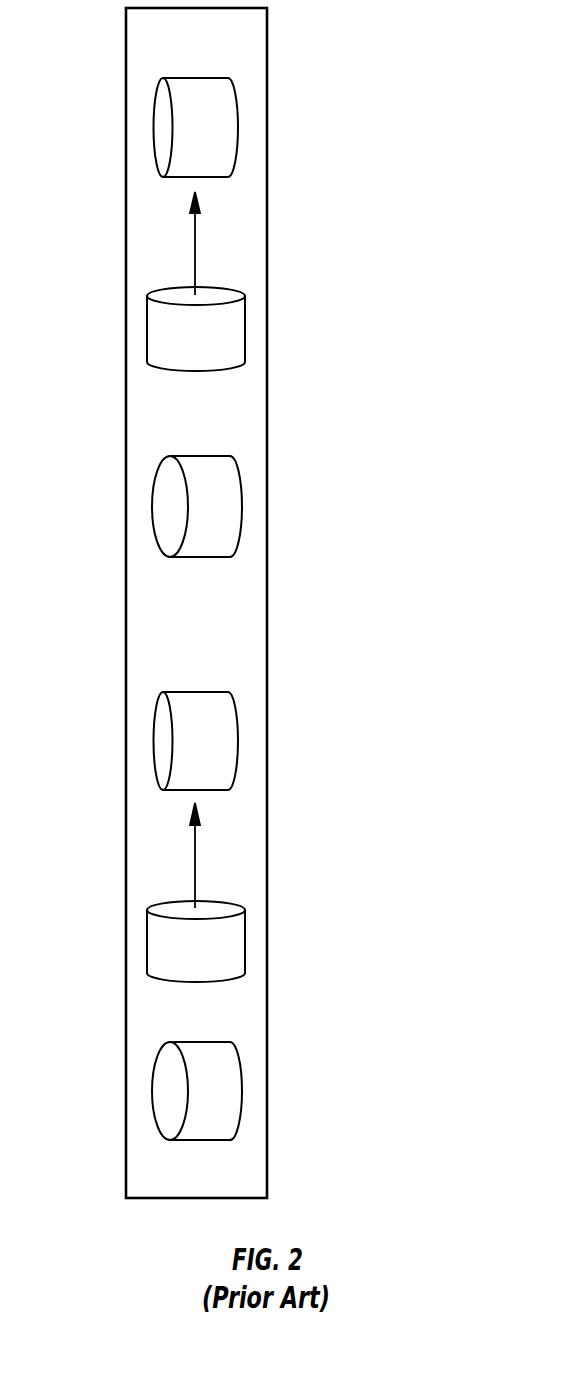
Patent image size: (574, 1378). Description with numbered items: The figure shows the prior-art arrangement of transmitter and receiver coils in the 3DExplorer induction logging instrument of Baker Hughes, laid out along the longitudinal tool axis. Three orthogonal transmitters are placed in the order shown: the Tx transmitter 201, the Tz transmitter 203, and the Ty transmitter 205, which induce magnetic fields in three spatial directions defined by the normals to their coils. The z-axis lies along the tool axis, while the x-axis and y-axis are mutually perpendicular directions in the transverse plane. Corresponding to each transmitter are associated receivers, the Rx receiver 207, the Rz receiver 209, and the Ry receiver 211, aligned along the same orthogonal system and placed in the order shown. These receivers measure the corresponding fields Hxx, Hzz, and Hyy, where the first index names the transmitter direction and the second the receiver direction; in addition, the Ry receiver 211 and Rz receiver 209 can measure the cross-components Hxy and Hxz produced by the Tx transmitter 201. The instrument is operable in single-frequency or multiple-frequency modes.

The Tx transmitter 201 is at (308, 131).
The Tz transmitter 203 is at (308, 338).
The Ty transmitter 205 is at (308, 511).
The Rx receiver 207 is at (311, 743).
The Rz receiver 209 is at (311, 944).
The Ry receiver 211 is at (311, 1093).